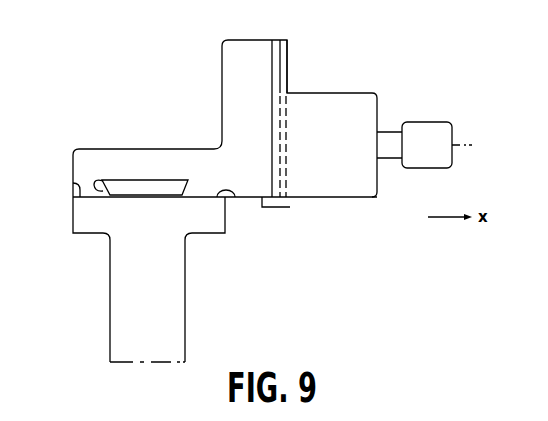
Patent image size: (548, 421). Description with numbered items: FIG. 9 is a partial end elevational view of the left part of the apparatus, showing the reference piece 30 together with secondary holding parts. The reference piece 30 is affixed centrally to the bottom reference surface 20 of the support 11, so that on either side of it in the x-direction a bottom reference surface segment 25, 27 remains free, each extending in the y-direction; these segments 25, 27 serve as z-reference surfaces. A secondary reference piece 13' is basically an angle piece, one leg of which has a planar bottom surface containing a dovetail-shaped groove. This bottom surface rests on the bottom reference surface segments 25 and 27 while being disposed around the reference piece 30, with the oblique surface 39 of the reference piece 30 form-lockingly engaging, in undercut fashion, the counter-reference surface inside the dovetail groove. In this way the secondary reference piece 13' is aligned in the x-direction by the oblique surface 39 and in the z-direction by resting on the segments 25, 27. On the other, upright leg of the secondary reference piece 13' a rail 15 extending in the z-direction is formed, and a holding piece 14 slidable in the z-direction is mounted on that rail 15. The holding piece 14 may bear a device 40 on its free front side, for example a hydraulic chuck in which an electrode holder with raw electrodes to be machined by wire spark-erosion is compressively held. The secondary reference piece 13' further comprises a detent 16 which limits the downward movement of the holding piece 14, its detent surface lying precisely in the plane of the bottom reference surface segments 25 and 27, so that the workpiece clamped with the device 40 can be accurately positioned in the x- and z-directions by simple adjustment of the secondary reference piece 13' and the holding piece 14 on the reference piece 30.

The support 11 is at (73, 226).
The secondary reference piece 13' is at (283, 118).
The holding piece 14 is at (329, 104).
The rail 15 is at (291, 51).
The detent 16 is at (290, 198).
The bottom reference surface 20 is at (201, 197).
The bottom reference surface segment 25 is at (73, 189).
The bottom reference surface segment 27 is at (228, 199).
The reference piece 30 is at (118, 180).
The oblique surface 39 is at (89, 174).
The device 40 is at (446, 142).